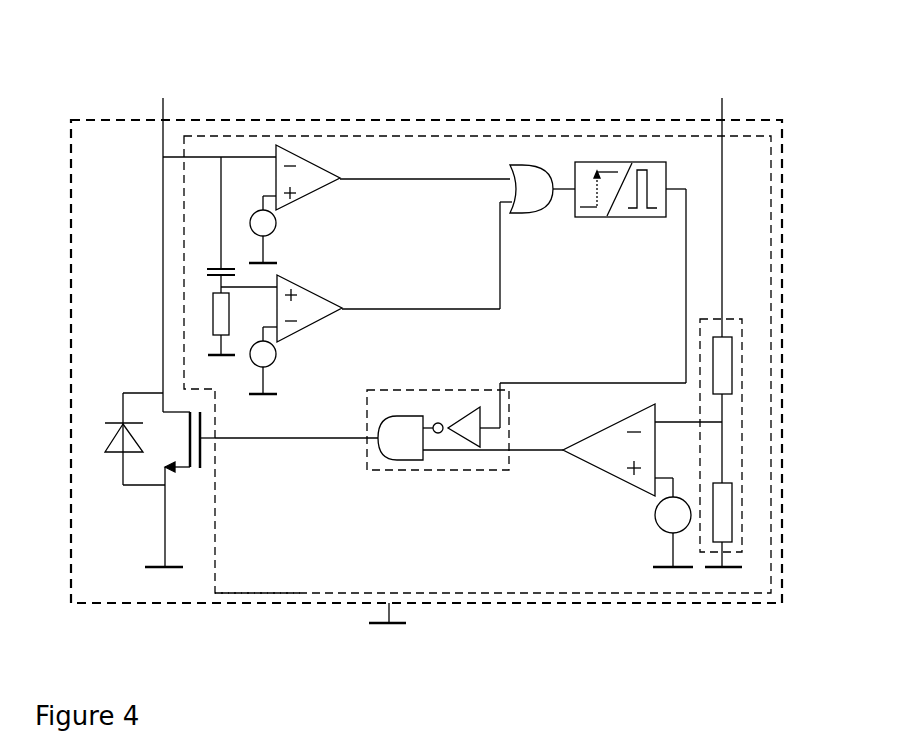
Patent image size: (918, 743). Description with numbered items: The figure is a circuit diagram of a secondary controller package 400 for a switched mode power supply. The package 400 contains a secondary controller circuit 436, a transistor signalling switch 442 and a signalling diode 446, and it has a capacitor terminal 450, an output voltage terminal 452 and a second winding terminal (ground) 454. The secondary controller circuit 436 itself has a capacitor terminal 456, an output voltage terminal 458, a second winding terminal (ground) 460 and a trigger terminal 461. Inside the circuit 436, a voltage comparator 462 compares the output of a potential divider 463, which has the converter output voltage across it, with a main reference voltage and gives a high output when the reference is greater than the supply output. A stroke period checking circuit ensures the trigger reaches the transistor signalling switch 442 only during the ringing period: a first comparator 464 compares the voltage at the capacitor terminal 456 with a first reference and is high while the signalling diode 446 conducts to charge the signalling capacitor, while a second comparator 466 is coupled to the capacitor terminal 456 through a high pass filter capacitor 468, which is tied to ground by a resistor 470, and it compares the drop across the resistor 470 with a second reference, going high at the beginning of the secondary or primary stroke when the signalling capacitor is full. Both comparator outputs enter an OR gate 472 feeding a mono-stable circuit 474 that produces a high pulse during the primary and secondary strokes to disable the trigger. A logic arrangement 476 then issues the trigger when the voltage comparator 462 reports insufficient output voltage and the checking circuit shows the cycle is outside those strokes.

The secondary controller package 400 is at (406, 94).
The secondary controller circuit 436 is at (245, 593).
The transistor signalling switch 442 is at (177, 472).
The signalling diode 446 is at (115, 452).
The capacitor terminal 450 is at (163, 120).
The output voltage terminal 452 is at (722, 120).
The second winding terminal (ground) 454 is at (389, 627).
The capacitor terminal 456 is at (185, 157).
The output voltage terminal 458 is at (722, 137).
The second winding terminal (ground) 460 is at (673, 560).
The trigger terminal 461 is at (212, 440).
The voltage comparator 462 is at (611, 448).
The potential divider 463 is at (702, 552).
The first comparator 464 is at (307, 165).
The second comparator 466 is at (293, 310).
The high pass filter capacitor 468 is at (215, 280).
The resistor 470 is at (215, 320).
The OR gate 472 is at (530, 177).
The mono-stable circuit 474 is at (582, 177).
The logic arrangement 476 is at (449, 470).